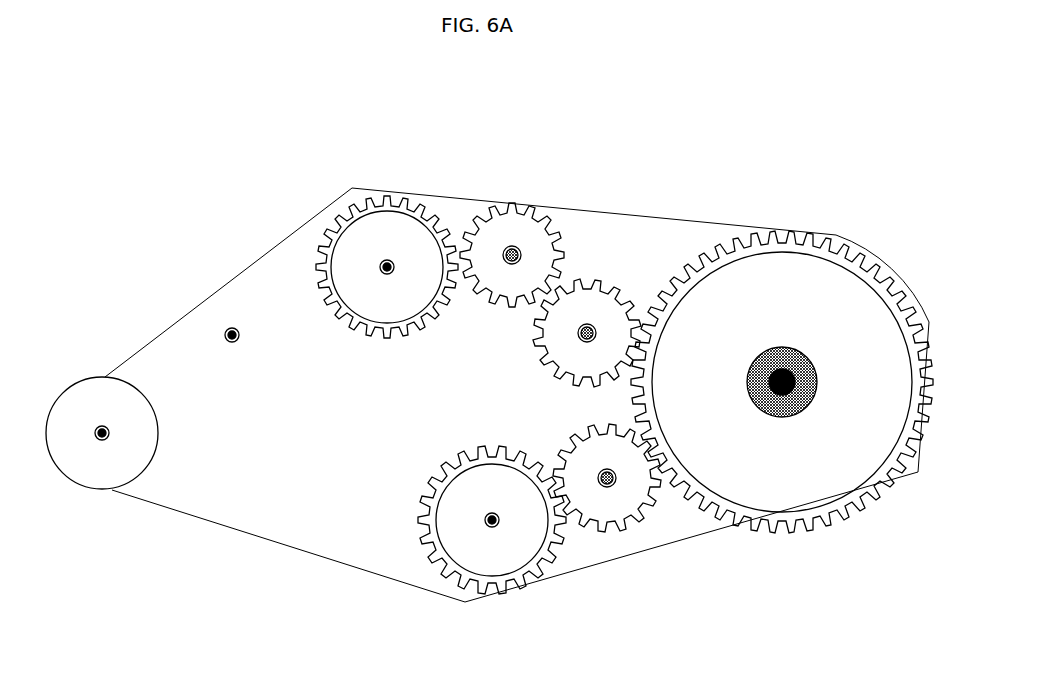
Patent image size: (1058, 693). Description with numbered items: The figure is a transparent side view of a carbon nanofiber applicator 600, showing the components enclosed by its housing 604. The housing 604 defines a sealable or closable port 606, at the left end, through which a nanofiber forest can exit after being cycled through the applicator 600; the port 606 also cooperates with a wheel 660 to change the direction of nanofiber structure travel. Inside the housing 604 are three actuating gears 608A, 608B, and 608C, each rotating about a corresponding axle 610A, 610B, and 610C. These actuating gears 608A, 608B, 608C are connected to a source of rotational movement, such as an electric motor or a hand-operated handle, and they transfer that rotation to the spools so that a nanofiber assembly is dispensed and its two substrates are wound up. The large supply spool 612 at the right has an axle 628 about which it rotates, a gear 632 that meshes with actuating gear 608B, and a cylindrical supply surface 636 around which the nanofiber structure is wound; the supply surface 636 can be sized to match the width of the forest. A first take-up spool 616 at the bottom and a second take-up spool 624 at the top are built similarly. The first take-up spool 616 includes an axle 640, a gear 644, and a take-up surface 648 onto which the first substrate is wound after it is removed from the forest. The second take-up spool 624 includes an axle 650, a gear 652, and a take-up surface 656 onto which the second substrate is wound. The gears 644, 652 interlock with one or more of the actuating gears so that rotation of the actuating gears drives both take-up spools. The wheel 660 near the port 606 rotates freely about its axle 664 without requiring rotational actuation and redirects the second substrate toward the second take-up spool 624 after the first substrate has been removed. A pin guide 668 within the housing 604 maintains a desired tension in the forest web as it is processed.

The carbon nanofiber applicator 600 is at (124, 153).
The housing 604 is at (140, 352).
The port 606 is at (136, 484).
The actuating gear 608A is at (500, 305).
The actuating gear 608B is at (537, 348).
The actuating gear 608C is at (577, 438).
The axle 610A is at (503, 256).
The axle 610B is at (580, 334).
The axle 610C is at (603, 476).
The supply spool 612 is at (661, 259).
The first take-up spool 616 is at (395, 511).
The second take-up spool 624 is at (298, 293).
The axle 628 is at (755, 393).
The gear 632 is at (717, 250).
The supply surface 636 is at (792, 252).
The axle 640 is at (490, 519).
The gear 644 is at (462, 460).
The take-up surface 648 is at (437, 500).
The axle 650 is at (412, 283).
The gear 652 is at (352, 316).
The take-up surface 656 is at (422, 318).
The wheel 660 is at (83, 380).
The axle 664 is at (100, 434).
The pin guide 668 is at (226, 337).